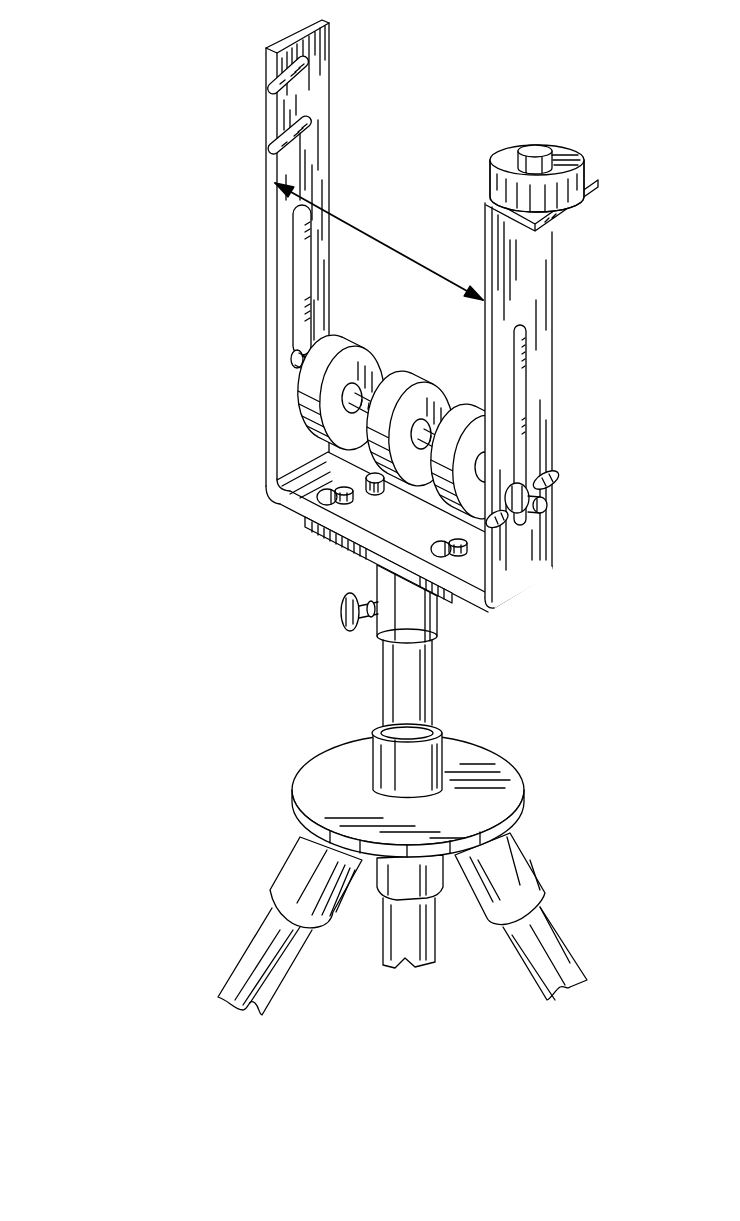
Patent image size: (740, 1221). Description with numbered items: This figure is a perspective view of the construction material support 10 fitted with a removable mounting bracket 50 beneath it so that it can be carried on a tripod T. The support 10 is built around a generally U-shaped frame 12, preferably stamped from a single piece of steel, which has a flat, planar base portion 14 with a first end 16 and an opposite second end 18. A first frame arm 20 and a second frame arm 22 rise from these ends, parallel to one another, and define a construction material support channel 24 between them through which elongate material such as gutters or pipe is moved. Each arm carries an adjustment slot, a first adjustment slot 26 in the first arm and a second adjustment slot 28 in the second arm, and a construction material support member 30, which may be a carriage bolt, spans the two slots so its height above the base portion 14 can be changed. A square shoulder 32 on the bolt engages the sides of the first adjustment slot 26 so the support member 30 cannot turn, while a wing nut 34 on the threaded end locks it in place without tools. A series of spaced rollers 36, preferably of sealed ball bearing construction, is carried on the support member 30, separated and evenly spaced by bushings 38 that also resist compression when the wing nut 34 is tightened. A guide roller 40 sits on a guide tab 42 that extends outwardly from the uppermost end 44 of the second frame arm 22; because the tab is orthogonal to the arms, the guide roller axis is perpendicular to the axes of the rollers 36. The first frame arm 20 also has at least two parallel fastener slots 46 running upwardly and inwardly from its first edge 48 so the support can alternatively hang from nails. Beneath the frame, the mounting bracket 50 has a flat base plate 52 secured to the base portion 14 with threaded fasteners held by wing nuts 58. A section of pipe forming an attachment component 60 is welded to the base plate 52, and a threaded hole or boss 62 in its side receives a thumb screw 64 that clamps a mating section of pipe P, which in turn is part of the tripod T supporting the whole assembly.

The construction material support 10 is at (160, 502).
The U-shaped frame 12 is at (555, 548).
The base portion 14 is at (296, 506).
The first end 16 is at (268, 491).
The second end 18 is at (530, 594).
The first frame arm 20 is at (268, 332).
The second frame arm 22 is at (542, 312).
The construction material support channel 24 is at (396, 250).
The first adjustment slot 26 is at (292, 274).
The second adjustment slot 28 is at (545, 386).
The construction material support member 30 is at (552, 506).
The square shoulder 32 is at (296, 360).
The wing nut 34 is at (550, 480).
The rollers 36 is at (462, 418).
The bushings 38 is at (430, 506).
The guide roller 40 is at (582, 153).
The guide tab 42 is at (600, 194).
The uppermost end 44 is at (500, 150).
The fastener slots 46 is at (271, 152).
The first edge 48 is at (268, 205).
The mounting bracket 50 is at (470, 650).
The base plate 52 is at (312, 528).
The wing nuts 58 is at (378, 576).
The attachment component 60 is at (386, 672).
The threaded hole or boss 62 is at (378, 640).
The thumb screw 64 is at (341, 614).
The mating section of pipe or tube P is at (436, 700).
The tripod T is at (240, 848).